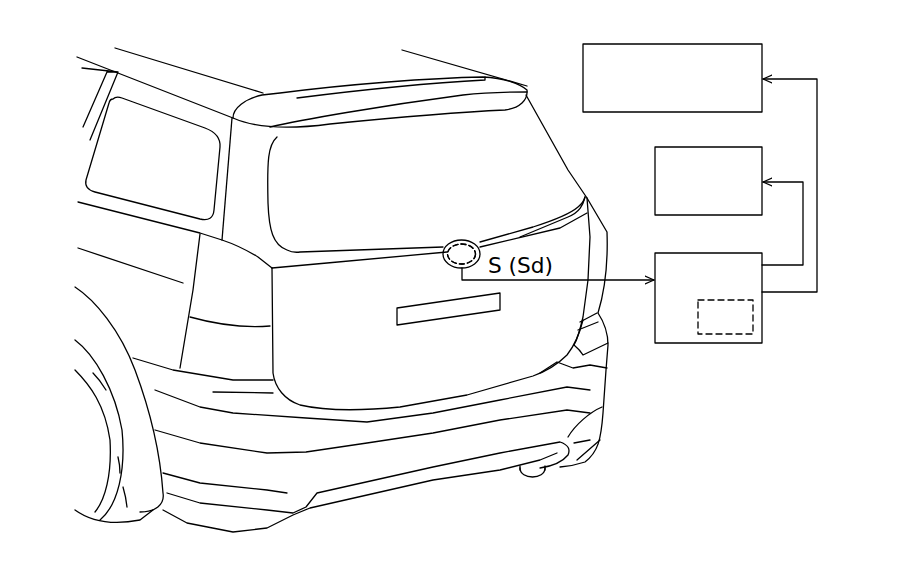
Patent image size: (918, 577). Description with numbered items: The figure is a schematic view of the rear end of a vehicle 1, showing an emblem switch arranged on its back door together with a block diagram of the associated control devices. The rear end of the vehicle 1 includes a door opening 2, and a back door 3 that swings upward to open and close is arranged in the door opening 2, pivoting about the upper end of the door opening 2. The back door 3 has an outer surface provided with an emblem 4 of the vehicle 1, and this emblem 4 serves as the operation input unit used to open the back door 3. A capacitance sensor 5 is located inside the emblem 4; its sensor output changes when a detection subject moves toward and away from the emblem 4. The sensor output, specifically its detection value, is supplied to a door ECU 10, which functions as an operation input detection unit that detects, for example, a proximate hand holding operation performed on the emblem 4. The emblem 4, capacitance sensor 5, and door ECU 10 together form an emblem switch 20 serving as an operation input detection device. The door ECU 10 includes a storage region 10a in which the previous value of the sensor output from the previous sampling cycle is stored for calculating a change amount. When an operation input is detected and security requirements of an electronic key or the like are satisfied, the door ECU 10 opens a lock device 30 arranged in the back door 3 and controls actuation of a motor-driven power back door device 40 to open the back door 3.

The vehicle 1 is at (528, 71).
The door opening 2 is at (269, 308).
The back door 3 is at (607, 368).
The emblem 4 is at (452, 265).
The capacitance sensor 5 is at (461, 238).
The door ECU 10 is at (737, 253).
The storage region 10a is at (754, 321).
The emblem switch 20 is at (743, 359).
The lock device 30 is at (737, 146).
The power back door device 40 is at (737, 43).